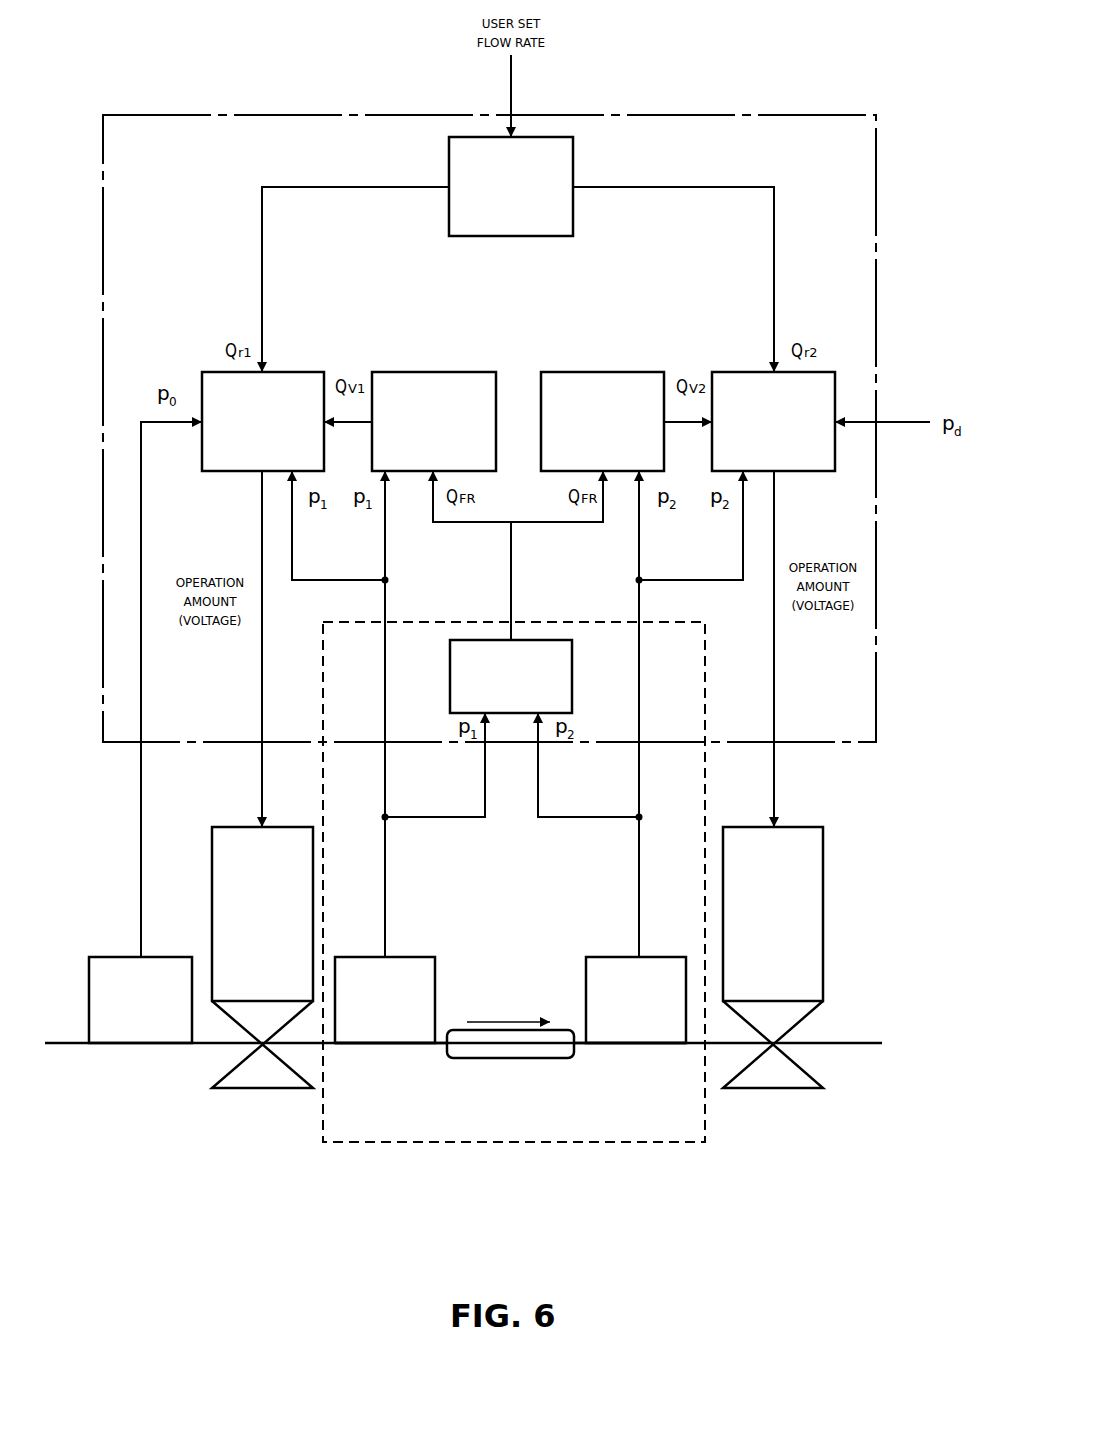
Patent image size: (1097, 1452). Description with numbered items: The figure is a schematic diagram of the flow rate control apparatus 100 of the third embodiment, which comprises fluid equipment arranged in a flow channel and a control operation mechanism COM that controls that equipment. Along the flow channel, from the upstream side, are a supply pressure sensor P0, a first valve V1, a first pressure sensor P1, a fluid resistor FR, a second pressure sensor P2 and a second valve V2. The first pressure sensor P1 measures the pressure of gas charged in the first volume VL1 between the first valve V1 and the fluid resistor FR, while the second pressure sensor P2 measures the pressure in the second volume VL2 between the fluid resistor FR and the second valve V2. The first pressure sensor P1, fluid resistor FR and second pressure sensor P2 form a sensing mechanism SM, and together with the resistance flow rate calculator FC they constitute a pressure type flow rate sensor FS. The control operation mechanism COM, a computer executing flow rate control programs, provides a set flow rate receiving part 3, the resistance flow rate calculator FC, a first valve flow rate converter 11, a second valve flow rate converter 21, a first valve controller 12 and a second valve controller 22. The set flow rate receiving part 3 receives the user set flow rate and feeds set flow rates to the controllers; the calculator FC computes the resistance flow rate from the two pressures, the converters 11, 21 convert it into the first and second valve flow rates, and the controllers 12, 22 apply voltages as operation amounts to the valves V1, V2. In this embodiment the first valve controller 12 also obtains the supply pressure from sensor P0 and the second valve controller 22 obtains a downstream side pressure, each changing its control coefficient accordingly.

The flow rate control apparatus 100 is at (729, 92).
The set flow rate receiving part 3 is at (467, 137).
The control operation mechanism COM is at (283, 115).
The first valve controller 12 is at (303, 372).
The first valve flow rate converter 11 is at (433, 372).
The second valve flow rate converter 21 is at (603, 372).
The second valve controller 22 is at (742, 372).
The flow rate sensor FS is at (467, 622).
The resistance flow rate calculator FC is at (553, 640).
The first valve V1 is at (232, 827).
The second valve V2 is at (825, 835).
The supply pressure sensor P0 is at (115, 957).
The first pressure sensor P1 is at (367, 957).
The second pressure sensor P2 is at (657, 957).
The first volume VL1 is at (385, 1046).
The second volume VL2 is at (638, 1047).
The fluid resistor FR is at (510, 1058).
The sensing mechanism SM is at (537, 1082).